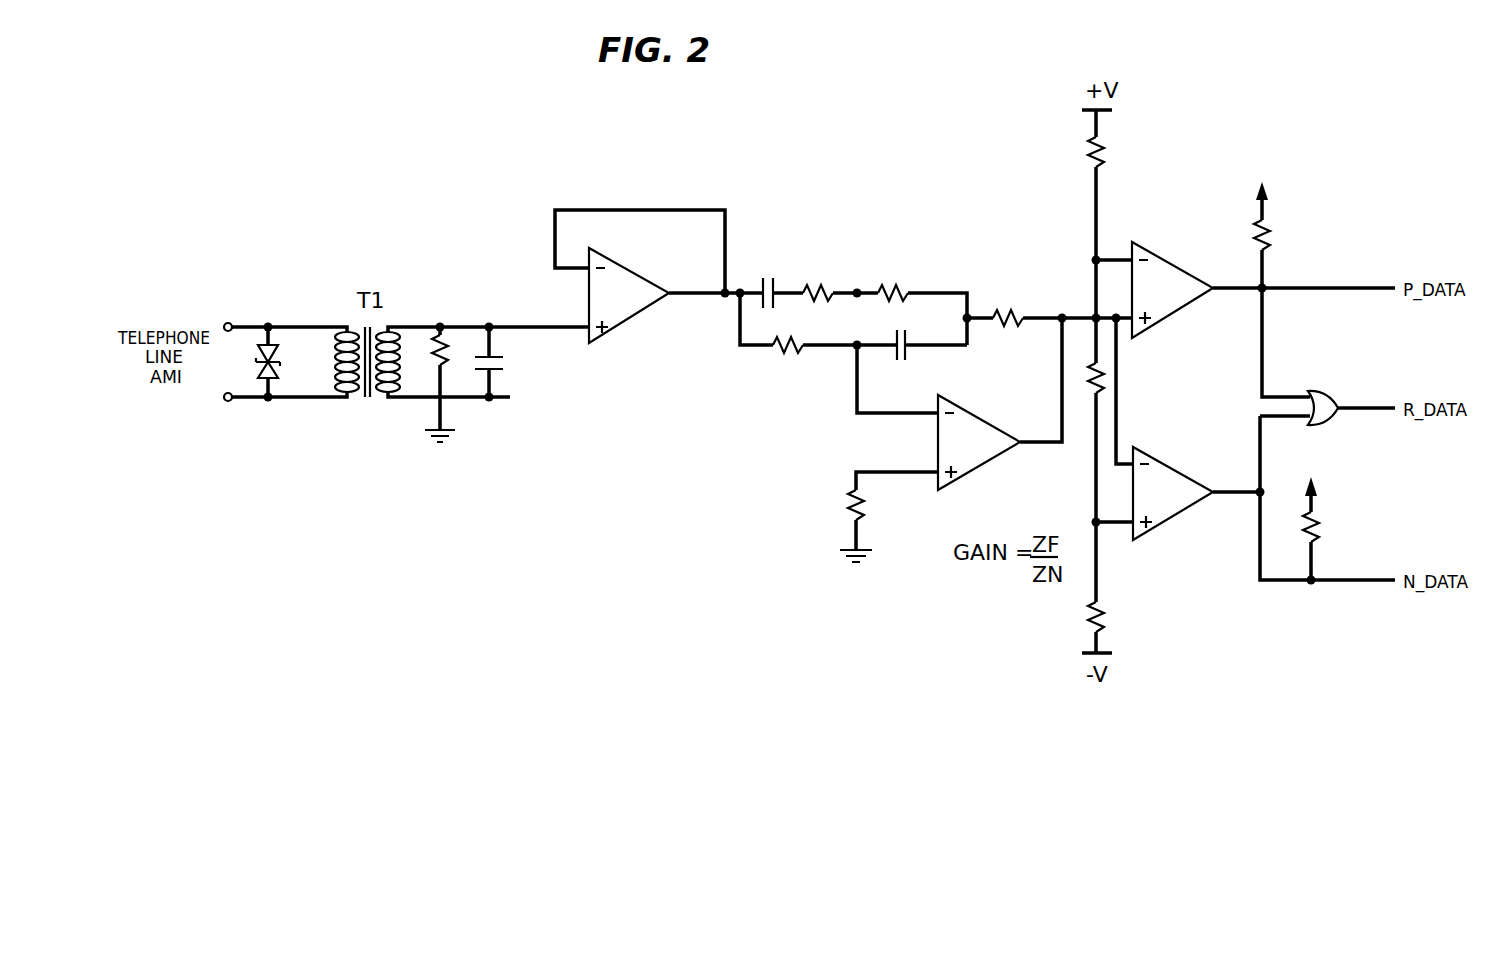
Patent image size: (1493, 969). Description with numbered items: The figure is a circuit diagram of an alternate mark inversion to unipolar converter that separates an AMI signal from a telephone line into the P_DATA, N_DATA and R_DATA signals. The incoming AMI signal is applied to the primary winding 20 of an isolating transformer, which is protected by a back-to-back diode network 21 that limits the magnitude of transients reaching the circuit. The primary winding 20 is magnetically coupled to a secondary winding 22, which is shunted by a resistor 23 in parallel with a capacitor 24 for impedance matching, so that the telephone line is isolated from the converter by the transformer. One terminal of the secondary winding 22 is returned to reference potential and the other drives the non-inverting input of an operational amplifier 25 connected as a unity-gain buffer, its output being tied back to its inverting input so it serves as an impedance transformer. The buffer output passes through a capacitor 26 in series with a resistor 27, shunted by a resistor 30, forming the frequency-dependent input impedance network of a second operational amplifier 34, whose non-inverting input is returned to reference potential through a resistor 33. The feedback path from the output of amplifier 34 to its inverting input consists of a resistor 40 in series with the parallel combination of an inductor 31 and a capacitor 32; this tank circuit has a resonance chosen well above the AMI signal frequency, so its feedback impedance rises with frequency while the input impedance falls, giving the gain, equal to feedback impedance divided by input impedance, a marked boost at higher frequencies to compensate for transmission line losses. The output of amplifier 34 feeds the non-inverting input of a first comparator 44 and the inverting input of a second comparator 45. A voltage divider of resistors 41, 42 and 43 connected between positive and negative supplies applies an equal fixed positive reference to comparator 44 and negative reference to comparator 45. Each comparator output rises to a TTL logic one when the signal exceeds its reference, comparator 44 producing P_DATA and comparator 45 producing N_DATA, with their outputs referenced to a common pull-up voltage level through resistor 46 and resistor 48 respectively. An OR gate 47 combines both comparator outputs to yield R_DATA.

The primary winding 20 is at (330, 400).
The diode network 21 is at (258, 370).
The secondary winding 22 is at (400, 400).
The resistor 23 is at (483, 383).
The capacitor 24 is at (505, 365).
The operational amplifier 25 is at (639, 320).
The capacitor 26 is at (763, 279).
The resistor 27 is at (816, 289).
The resistor 30 is at (771, 355).
The inductor 31 is at (898, 289).
The capacitor 32 is at (905, 362).
The resistor 33 is at (866, 512).
The operational amplifier 34 is at (975, 470).
The resistor 40 is at (1010, 313).
The resistor 41 is at (1104, 150).
The resistor 42 is at (1104, 388).
The resistor 43 is at (1104, 598).
The first comparator 44 is at (1170, 318).
The second comparator 45 is at (1170, 522).
The resistor 46 is at (1270, 236).
The OR gate 47 is at (1311, 428).
The resistor 48 is at (1320, 528).